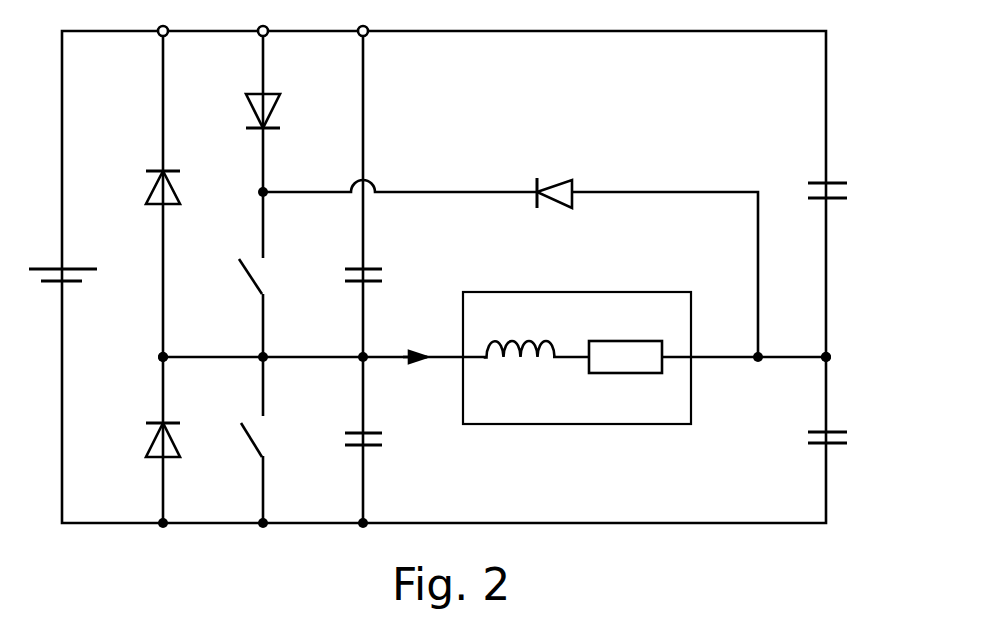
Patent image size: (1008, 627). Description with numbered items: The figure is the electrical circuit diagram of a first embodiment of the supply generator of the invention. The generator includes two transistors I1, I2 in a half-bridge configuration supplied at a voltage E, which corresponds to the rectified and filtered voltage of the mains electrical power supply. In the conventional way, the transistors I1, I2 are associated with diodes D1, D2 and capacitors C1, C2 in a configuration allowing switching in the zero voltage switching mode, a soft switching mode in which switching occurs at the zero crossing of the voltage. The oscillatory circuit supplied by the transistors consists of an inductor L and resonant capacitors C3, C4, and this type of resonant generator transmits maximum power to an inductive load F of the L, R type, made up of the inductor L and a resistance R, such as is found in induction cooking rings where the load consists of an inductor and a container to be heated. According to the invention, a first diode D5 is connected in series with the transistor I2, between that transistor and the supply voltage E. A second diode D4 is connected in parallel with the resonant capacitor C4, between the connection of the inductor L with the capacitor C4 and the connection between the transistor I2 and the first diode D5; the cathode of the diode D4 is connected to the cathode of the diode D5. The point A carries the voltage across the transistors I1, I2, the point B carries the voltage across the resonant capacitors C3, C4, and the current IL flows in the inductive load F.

The supply voltage E is at (50, 277).
The diode D1 is at (184, 445).
The diode D2 is at (185, 192).
The second diode D4 is at (558, 173).
The first diode D5 is at (286, 114).
The transistor I1 is at (270, 439).
The transistor I2 is at (269, 280).
The capacitor C1 is at (383, 441).
The capacitor C2 is at (386, 278).
The resonant capacitor C3 is at (849, 440).
The resonant capacitor C4 is at (849, 190).
The point A is at (149, 356).
The point B is at (841, 356).
The current IL is at (413, 339).
The inductive load F is at (598, 424).
The inductor L is at (520, 332).
The resistance R is at (625, 338).